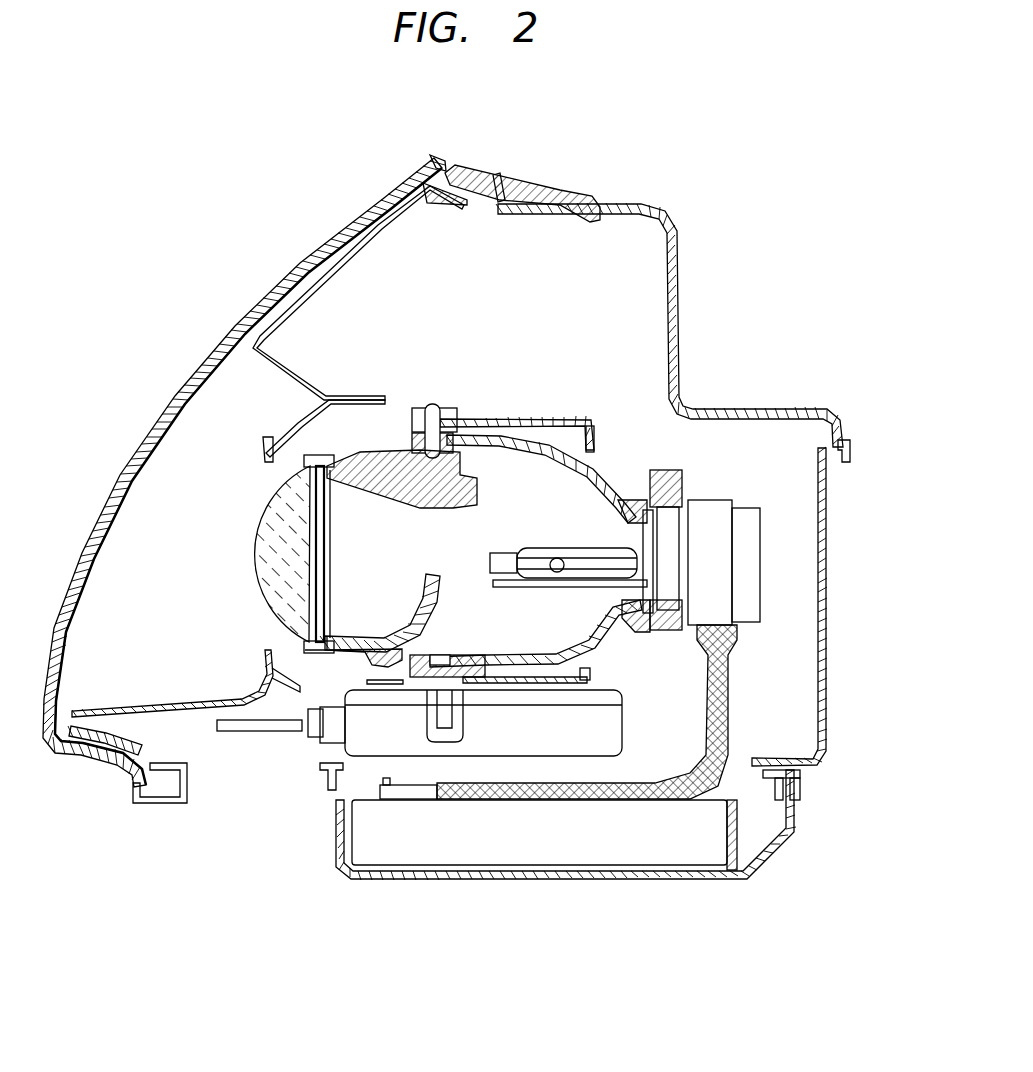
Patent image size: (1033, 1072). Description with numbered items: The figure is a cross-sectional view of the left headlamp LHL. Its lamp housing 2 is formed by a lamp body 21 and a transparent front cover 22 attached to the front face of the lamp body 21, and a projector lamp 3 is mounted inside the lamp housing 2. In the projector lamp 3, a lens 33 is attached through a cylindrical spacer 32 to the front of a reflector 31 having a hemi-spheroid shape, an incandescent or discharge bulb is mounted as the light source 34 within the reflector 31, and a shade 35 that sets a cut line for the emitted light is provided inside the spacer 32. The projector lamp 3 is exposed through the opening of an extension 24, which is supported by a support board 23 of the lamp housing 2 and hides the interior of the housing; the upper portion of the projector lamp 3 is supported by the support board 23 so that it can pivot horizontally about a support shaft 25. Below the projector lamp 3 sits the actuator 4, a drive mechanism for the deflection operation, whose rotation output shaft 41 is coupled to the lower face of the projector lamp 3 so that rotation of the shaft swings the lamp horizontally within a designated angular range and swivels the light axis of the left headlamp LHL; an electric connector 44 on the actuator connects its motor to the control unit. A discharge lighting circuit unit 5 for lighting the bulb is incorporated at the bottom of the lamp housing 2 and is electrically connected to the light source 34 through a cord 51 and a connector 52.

The lamp housing 2 is at (580, 206).
The lamp body 21 is at (635, 208).
The transparent front cover 22 is at (247, 312).
The support board 23 is at (520, 422).
The extension 24 is at (195, 704).
The support shaft 25 is at (430, 405).
The projector lamp 3 is at (248, 490).
The reflector 31 is at (568, 452).
The cylindrical spacer 32 is at (377, 457).
The lens 33 is at (238, 530).
The light source 34 is at (535, 548).
The shade 35 is at (428, 572).
The actuator 4 is at (595, 745).
The rotation output shaft 41 is at (435, 655).
The electric connector 44 is at (302, 730).
The discharge lighting circuit unit 5 is at (525, 848).
The cord 51 is at (728, 703).
The connector 52 is at (712, 505).
The left headlamp LHL is at (268, 245).